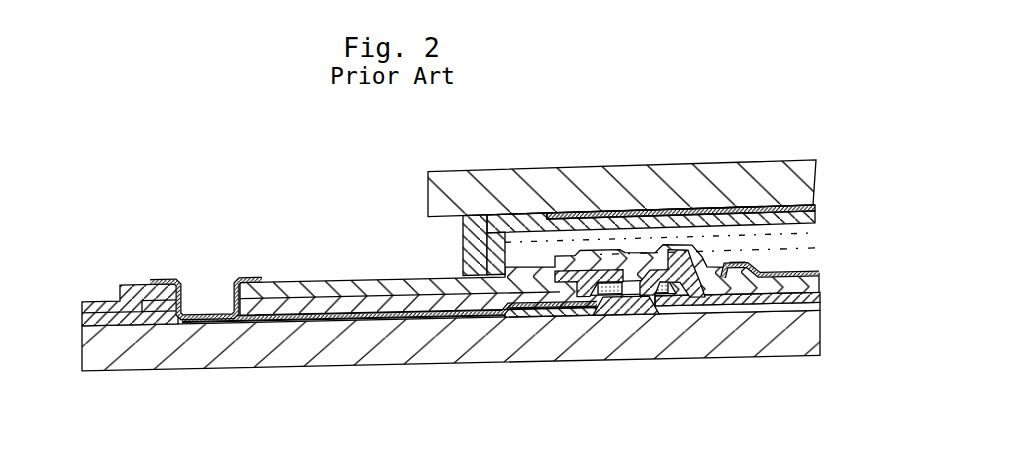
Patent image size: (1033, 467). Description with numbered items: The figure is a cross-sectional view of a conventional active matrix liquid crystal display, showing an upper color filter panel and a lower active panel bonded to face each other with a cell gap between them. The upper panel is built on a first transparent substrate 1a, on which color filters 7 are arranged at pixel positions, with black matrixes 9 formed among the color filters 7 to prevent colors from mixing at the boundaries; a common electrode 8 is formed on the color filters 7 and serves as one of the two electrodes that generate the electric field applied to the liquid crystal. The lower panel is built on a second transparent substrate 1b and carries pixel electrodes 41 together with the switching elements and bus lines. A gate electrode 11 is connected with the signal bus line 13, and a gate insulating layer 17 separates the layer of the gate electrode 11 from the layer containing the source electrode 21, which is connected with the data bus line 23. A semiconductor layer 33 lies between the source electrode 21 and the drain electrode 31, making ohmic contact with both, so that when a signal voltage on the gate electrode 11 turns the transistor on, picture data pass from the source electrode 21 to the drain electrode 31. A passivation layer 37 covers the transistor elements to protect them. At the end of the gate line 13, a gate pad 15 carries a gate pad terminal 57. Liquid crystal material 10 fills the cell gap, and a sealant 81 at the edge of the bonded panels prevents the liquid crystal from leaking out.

The first transparent substrate 1a is at (683, 182).
The second transparent substrate 1b is at (128, 352).
The color filters 7 is at (784, 210).
The common electrode 8 is at (805, 210).
The black matrixes 9 is at (520, 212).
The liquid crystal material 10 is at (797, 256).
The gate electrode 11 is at (630, 300).
The signal bus line 13 is at (404, 320).
The gate pad 15 is at (190, 328).
The gate insulating layer 17 is at (291, 326).
The source electrode 21 is at (590, 305).
The data bus line 23 is at (537, 302).
The drain electrode 31 is at (722, 290).
The semiconductor layer 33 is at (680, 298).
The passivation layer 37 is at (327, 292).
The pixel electrode 41 is at (805, 300).
The gate pad terminal 57 is at (245, 279).
The sealant 81 is at (465, 238).